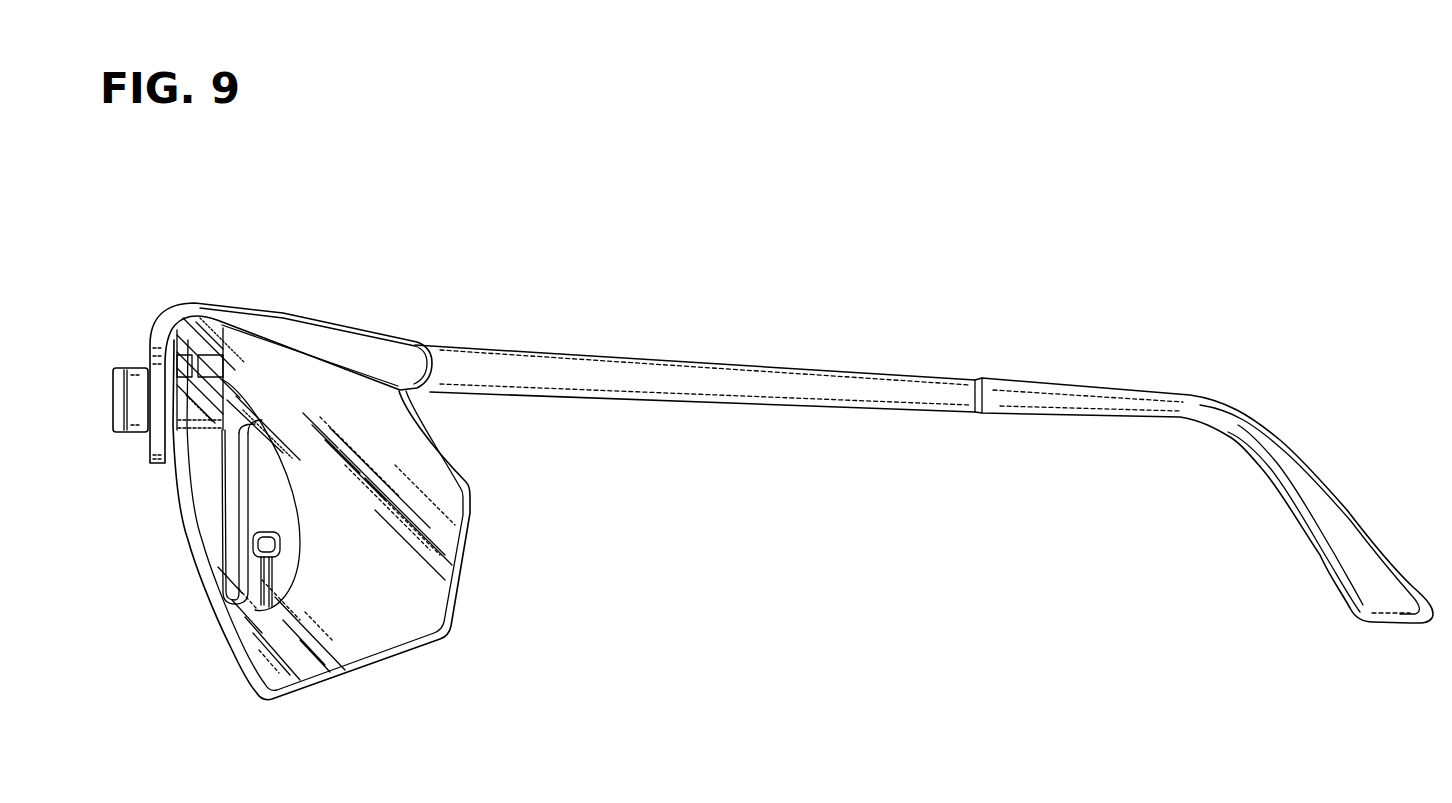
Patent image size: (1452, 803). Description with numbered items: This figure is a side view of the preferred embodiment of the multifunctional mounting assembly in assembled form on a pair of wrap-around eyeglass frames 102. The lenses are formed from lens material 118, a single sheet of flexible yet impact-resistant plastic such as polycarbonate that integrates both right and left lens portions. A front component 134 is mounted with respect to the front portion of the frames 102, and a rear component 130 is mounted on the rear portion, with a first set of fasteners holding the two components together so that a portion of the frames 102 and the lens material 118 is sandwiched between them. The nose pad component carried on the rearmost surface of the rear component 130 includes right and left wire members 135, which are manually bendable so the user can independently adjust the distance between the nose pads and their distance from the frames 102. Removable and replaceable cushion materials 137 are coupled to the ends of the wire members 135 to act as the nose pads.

The wrap-around frames 102 is at (513, 372).
The lens material 118 is at (381, 569).
The rear component 130 is at (197, 402).
The front component 134 is at (115, 335).
The wire members 135 is at (240, 492).
The cushion materials 137 is at (288, 568).